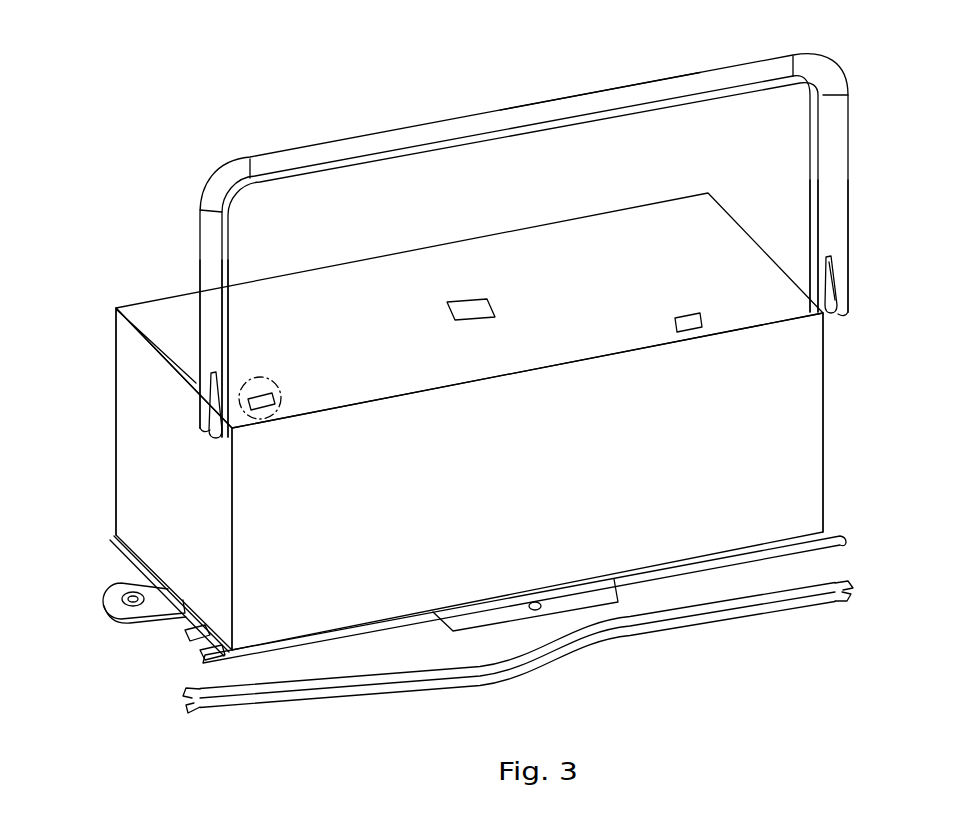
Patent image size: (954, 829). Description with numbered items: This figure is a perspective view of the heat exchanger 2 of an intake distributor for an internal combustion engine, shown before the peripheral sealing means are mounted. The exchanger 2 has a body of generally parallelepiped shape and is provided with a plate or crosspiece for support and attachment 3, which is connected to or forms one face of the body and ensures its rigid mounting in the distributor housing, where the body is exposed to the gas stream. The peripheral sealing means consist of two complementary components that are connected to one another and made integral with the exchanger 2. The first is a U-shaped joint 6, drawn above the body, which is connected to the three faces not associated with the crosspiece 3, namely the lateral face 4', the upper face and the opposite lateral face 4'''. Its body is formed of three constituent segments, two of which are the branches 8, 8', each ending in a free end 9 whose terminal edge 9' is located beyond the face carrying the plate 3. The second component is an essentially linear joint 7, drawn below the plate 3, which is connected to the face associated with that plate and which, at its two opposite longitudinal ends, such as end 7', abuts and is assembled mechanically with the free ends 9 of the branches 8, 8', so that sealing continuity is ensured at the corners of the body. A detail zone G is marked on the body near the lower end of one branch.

The heat exchanger 2 is at (792, 493).
The plate or crosspiece for support and attachment 3 is at (327, 633).
The lateral face 4' is at (147, 479).
The lateral face 4''' is at (866, 422).
The U-shaped joint 6 is at (428, 133).
The linear joint 7 is at (517, 661).
The longitudinal end of the linear joint 7' is at (219, 743).
The branch of the U-shaped joint 8 is at (186, 317).
The branch of the U-shaped joint 8' is at (864, 221).
The free ends of the branches 9 is at (579, 347).
The terminal edges of the free ends 9' is at (854, 281).
The detail region G is at (240, 412).